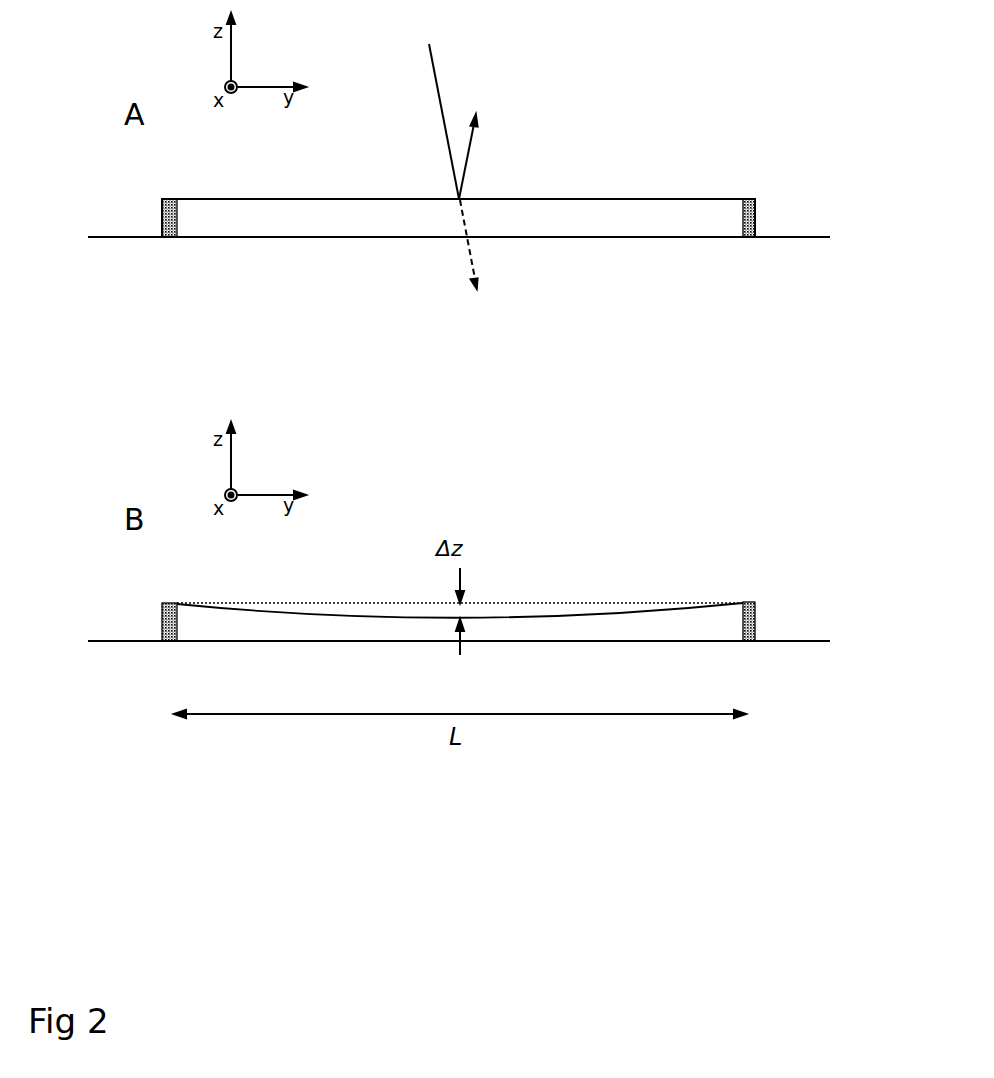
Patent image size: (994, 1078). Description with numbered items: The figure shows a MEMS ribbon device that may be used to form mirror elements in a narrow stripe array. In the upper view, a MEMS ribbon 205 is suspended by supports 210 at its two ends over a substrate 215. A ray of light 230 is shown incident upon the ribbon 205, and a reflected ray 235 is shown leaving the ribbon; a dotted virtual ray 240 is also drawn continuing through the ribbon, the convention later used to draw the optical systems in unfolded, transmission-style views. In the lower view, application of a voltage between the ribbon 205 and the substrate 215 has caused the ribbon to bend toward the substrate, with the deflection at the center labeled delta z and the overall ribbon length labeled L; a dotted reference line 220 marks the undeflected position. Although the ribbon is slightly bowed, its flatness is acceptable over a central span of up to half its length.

In FIG. 2A, the MEMS ribbon 205 is at (590, 196).
In FIG. 2B, the MEMS ribbon 205 is at (663, 608).
In FIG. 2A, the supports 210 is at (755, 205).
In FIG. 2B, the supports 210 is at (755, 610).
In FIG. 2A, the substrate 215 is at (813, 232).
In FIG. 2B, the substrate 215 is at (815, 637).
In FIG. 2B, the undeformed reference plane 220 is at (310, 603).
In FIG. 2A, the ray of light 230 is at (437, 70).
In FIG. 2A, the reflected ray 235 is at (471, 146).
In FIG. 2A, the virtual ray 240 is at (472, 265).